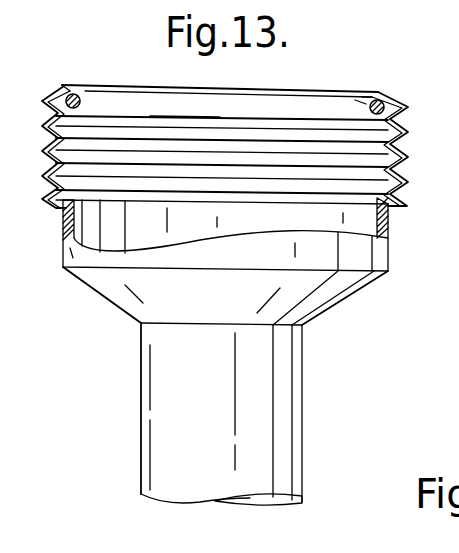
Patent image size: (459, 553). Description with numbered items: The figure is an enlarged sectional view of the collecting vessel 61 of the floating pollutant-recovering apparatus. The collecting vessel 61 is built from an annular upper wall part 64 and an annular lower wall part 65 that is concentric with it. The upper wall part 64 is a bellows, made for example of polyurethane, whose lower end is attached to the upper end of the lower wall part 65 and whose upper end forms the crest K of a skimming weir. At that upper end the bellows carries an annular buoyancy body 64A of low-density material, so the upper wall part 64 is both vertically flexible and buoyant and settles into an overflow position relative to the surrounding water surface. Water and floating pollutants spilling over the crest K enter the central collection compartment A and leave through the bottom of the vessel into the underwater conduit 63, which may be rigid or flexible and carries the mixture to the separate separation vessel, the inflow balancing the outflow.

The collecting vessel 61 is at (117, 84).
The crest of skimming weir K is at (374, 95).
The annular buoyancy body 64A is at (368, 107).
The annular upper wall part 64 is at (408, 136).
The collection compartment A is at (187, 133).
The annular lower wall part 65 is at (386, 256).
The underwater conduit 63 is at (293, 436).